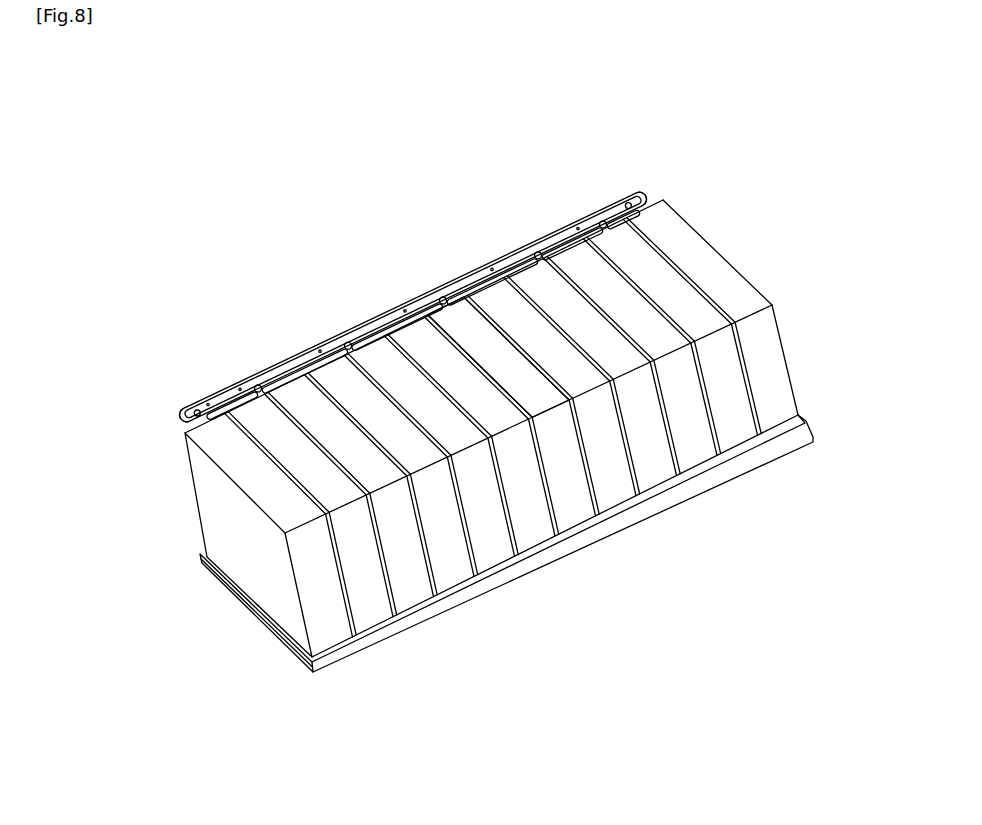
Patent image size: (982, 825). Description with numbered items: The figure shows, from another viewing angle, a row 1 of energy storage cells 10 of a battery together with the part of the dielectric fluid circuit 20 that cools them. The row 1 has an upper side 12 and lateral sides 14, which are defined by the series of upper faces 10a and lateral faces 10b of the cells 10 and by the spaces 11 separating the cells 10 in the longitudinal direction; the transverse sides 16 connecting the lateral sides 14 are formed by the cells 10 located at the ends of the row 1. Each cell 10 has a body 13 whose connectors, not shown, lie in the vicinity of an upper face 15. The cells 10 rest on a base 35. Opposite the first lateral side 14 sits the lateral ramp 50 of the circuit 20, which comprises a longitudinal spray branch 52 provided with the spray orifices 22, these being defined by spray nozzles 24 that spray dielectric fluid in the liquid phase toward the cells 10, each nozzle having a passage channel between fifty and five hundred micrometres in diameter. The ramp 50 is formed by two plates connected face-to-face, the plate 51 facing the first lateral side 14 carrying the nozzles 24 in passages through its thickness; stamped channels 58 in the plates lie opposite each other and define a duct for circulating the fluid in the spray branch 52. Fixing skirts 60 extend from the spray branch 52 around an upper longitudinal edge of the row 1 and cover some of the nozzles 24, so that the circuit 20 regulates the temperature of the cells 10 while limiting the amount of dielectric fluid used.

The row 1 is at (182, 527).
The energy storage cell 10 is at (363, 608).
The upper face 10a is at (564, 495).
The lateral face 10b is at (458, 330).
The space 11 is at (397, 598).
The upper side 12 is at (590, 180).
The body 13 is at (413, 582).
The lateral side 14 is at (683, 547).
The upper face of the body 15 is at (474, 306).
The transverse side 16 is at (249, 576).
The dielectric fluid circuit 20 is at (490, 240).
The spray orifice 22 is at (391, 344).
The spray nozzle 24 is at (259, 384).
The base 35 is at (788, 447).
The lateral ramp 50 is at (180, 389).
The plate 51 is at (639, 192).
The longitudinal branch 52 is at (395, 300).
The channel 58 is at (186, 424).
The fixing skirt 60 is at (533, 248).